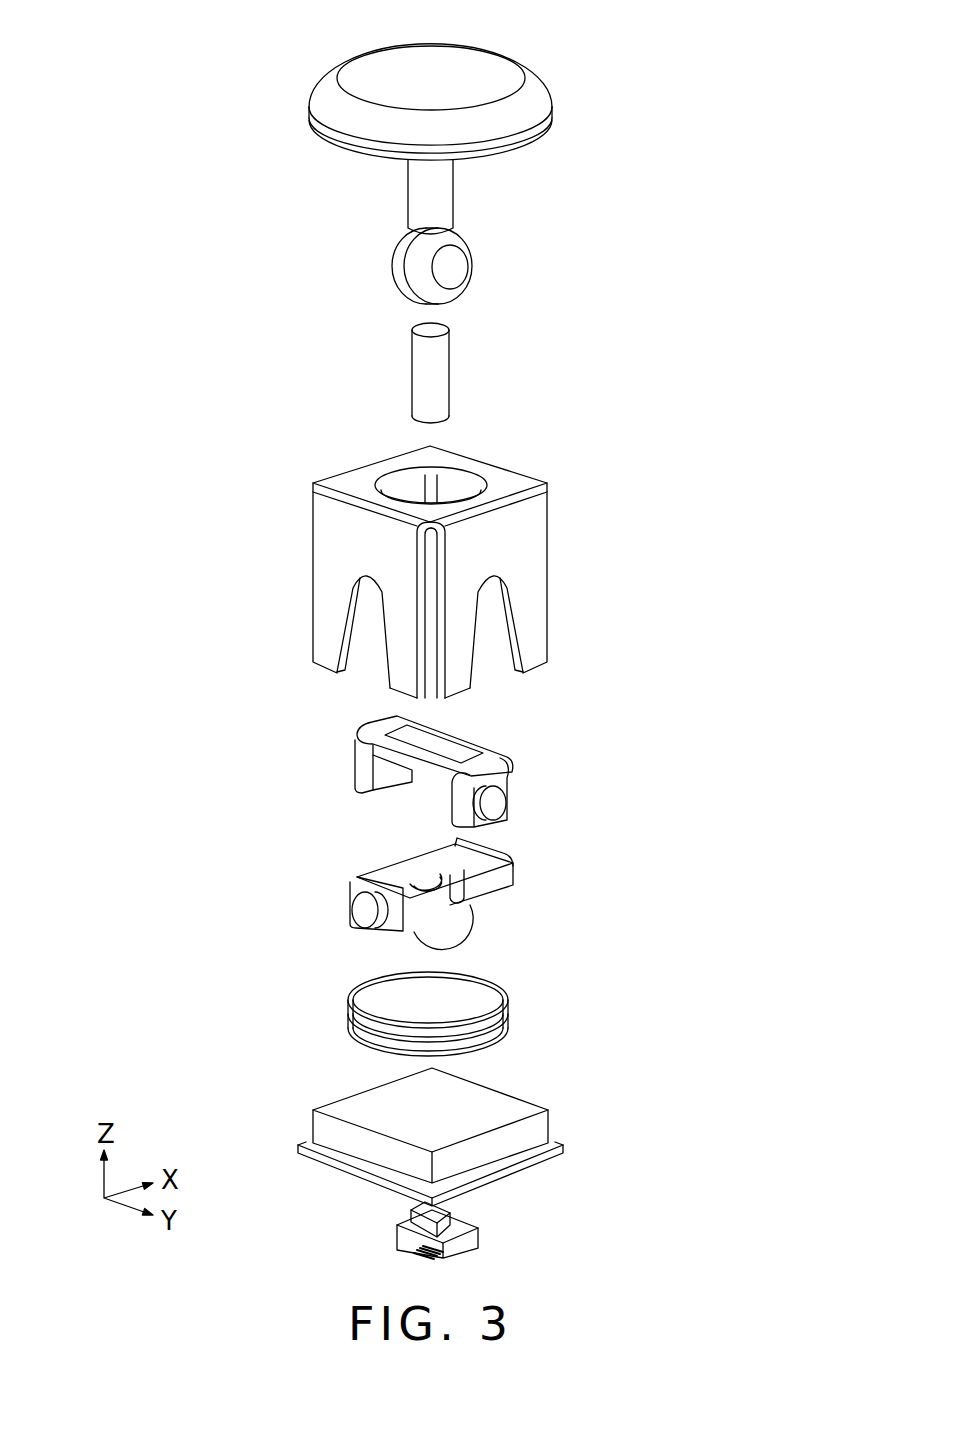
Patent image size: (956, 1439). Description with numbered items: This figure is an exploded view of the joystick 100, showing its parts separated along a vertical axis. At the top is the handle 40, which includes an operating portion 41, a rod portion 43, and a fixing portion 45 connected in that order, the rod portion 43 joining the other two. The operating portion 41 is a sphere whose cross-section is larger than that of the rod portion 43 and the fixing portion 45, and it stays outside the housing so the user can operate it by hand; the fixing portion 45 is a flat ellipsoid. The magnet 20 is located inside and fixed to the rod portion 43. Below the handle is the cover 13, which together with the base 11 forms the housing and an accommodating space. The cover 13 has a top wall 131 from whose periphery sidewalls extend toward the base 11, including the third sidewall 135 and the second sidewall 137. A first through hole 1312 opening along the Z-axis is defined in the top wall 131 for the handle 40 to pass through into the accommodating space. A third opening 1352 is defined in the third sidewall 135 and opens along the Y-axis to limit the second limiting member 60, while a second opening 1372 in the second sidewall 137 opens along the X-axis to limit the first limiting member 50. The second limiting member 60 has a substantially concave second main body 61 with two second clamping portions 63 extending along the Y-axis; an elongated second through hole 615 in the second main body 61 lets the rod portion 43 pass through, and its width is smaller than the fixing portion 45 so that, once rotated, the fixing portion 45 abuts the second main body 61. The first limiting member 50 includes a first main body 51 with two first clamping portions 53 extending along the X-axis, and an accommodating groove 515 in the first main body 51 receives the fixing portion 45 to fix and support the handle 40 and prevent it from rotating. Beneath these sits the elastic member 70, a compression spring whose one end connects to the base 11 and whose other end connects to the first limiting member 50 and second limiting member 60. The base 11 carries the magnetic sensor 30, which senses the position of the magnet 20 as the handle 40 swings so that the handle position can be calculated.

The joystick 100 is at (275, 25).
The handle 40 is at (560, 170).
The operating portion 41 is at (455, 128).
The rod portion 43 is at (433, 205).
The fixing portion 45 is at (450, 265).
The magnet 20 is at (438, 370).
The cover 13 is at (577, 514).
The top wall 131 is at (502, 482).
The first through hole 1312 is at (397, 477).
The third sidewall 135 is at (542, 582).
The third opening 1352 is at (515, 638).
The second sidewall 137 is at (327, 563).
The second opening 1372 is at (350, 628).
The second limiting member 60 is at (579, 718).
The second main body 61 is at (428, 763).
The second through hole 615 is at (388, 731).
The second clamping portion 63 is at (500, 805).
The first limiting member 50 is at (273, 880).
The first main body 51 is at (433, 930).
The accommodating groove 515 is at (431, 871).
The first clamping portion 53 is at (363, 907).
The elastic member 70 is at (502, 1000).
The base 11 is at (495, 1107).
The magnetic sensor 30 is at (470, 1242).